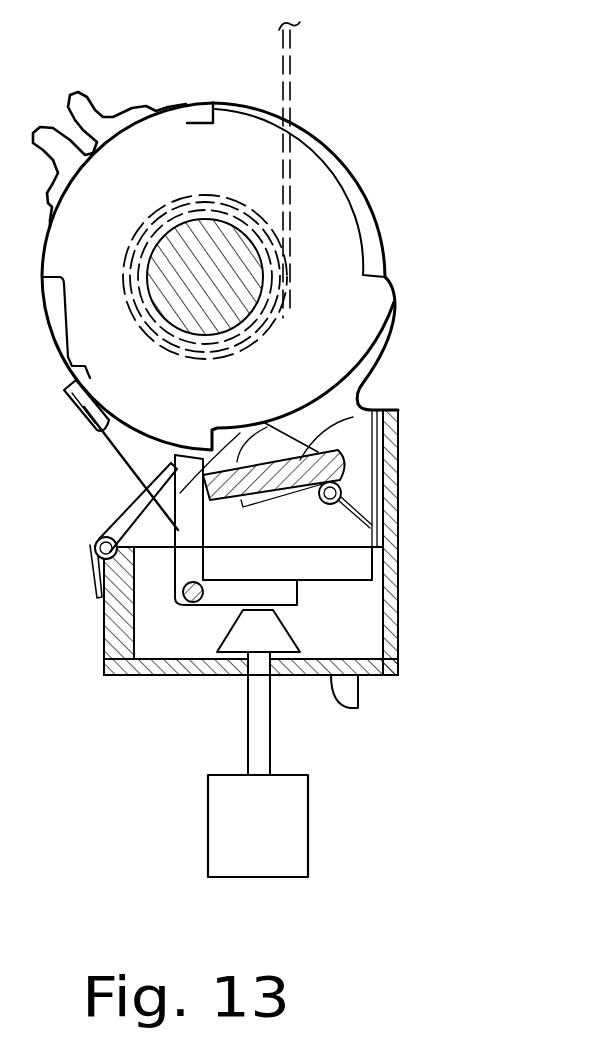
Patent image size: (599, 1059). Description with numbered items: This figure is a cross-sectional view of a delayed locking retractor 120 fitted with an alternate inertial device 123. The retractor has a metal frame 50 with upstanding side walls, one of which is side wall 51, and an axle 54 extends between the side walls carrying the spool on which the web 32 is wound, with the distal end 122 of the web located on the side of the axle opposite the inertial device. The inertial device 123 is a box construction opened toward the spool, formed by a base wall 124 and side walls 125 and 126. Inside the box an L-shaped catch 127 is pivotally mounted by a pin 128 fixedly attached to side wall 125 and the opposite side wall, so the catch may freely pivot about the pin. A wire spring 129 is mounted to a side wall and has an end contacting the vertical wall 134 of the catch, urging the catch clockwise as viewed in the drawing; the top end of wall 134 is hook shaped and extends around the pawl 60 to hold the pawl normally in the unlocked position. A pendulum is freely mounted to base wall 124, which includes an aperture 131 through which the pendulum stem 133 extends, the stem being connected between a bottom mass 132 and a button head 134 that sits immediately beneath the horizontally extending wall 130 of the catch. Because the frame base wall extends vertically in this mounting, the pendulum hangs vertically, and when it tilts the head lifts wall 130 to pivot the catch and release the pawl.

The retractor 120 is at (380, 158).
The distal end of the web 122 is at (282, 68).
The web 32 is at (188, 198).
The axle 54 is at (163, 282).
The side wall 51 is at (370, 362).
The pawl 60 is at (300, 445).
The metal frame 50 is at (400, 515).
The side wall 125 is at (365, 620).
The inertial device 123 is at (394, 722).
The wire spring 129 is at (172, 468).
The L-shaped catch 127 is at (132, 518).
The vertical wall 134 is at (198, 530).
The horizontally extending wall 130 is at (292, 575).
The pin 128 is at (181, 596).
The side wall 126 is at (112, 640).
The base wall 124 is at (150, 675).
The aperture 131 is at (248, 680).
The pendulum stem 133 is at (268, 732).
The bottom mass 132 is at (309, 832).